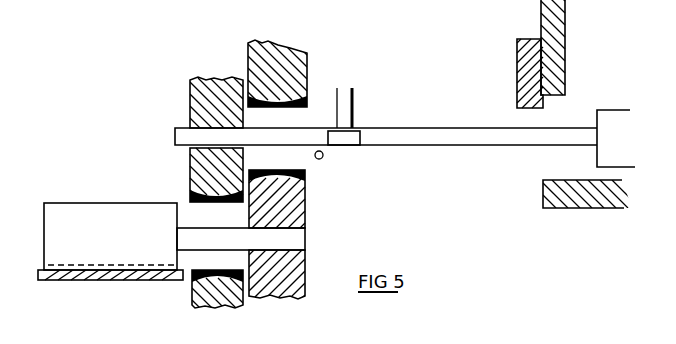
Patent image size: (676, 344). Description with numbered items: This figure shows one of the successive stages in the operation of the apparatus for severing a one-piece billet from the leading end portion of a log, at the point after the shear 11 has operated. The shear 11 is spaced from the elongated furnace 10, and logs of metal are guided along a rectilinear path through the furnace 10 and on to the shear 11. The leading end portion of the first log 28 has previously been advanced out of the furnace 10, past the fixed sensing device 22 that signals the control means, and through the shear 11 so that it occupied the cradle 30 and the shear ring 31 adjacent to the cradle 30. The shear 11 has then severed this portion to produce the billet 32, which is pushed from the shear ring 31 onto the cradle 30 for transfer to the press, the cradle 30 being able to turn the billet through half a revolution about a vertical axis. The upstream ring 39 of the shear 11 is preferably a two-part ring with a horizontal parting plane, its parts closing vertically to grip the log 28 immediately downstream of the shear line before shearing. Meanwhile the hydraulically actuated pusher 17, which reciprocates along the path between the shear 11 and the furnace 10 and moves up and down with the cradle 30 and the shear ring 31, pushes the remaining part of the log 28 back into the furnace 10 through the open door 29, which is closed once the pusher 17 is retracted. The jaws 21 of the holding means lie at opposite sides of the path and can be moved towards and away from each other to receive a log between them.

The furnace 10 is at (533, 37).
The shear 11 is at (177, 109).
The pusher 17 is at (412, 128).
The jaws 21 is at (361, 135).
The sensing device 22 is at (330, 160).
The first log 28 is at (597, 112).
The door 29 is at (517, 82).
The cradle 30 is at (97, 280).
The shear ring 31 is at (192, 287).
The billet 32 is at (88, 203).
The upstream ring 39 is at (307, 82).